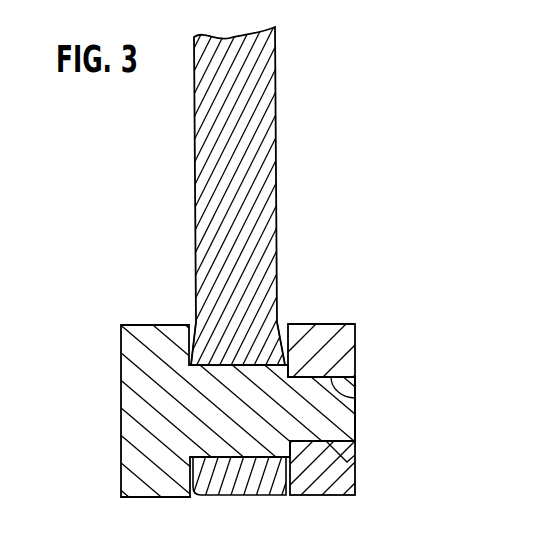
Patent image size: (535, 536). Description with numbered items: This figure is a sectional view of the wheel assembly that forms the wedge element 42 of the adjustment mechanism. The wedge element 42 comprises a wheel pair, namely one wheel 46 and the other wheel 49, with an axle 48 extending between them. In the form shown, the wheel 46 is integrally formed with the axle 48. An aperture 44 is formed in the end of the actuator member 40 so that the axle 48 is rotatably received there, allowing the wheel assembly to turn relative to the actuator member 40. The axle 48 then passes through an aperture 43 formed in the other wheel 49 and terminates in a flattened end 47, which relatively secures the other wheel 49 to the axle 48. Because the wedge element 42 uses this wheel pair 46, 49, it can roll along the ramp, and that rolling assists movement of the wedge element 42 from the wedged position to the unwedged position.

The actuator member 40 is at (278, 120).
The wedge element 42 is at (355, 349).
The aperture 43 is at (352, 457).
The aperture 44 is at (279, 320).
The wheel 46 is at (135, 325).
The flattened end 47 is at (355, 435).
The axle 48 is at (346, 399).
The wheel 49 is at (352, 324).